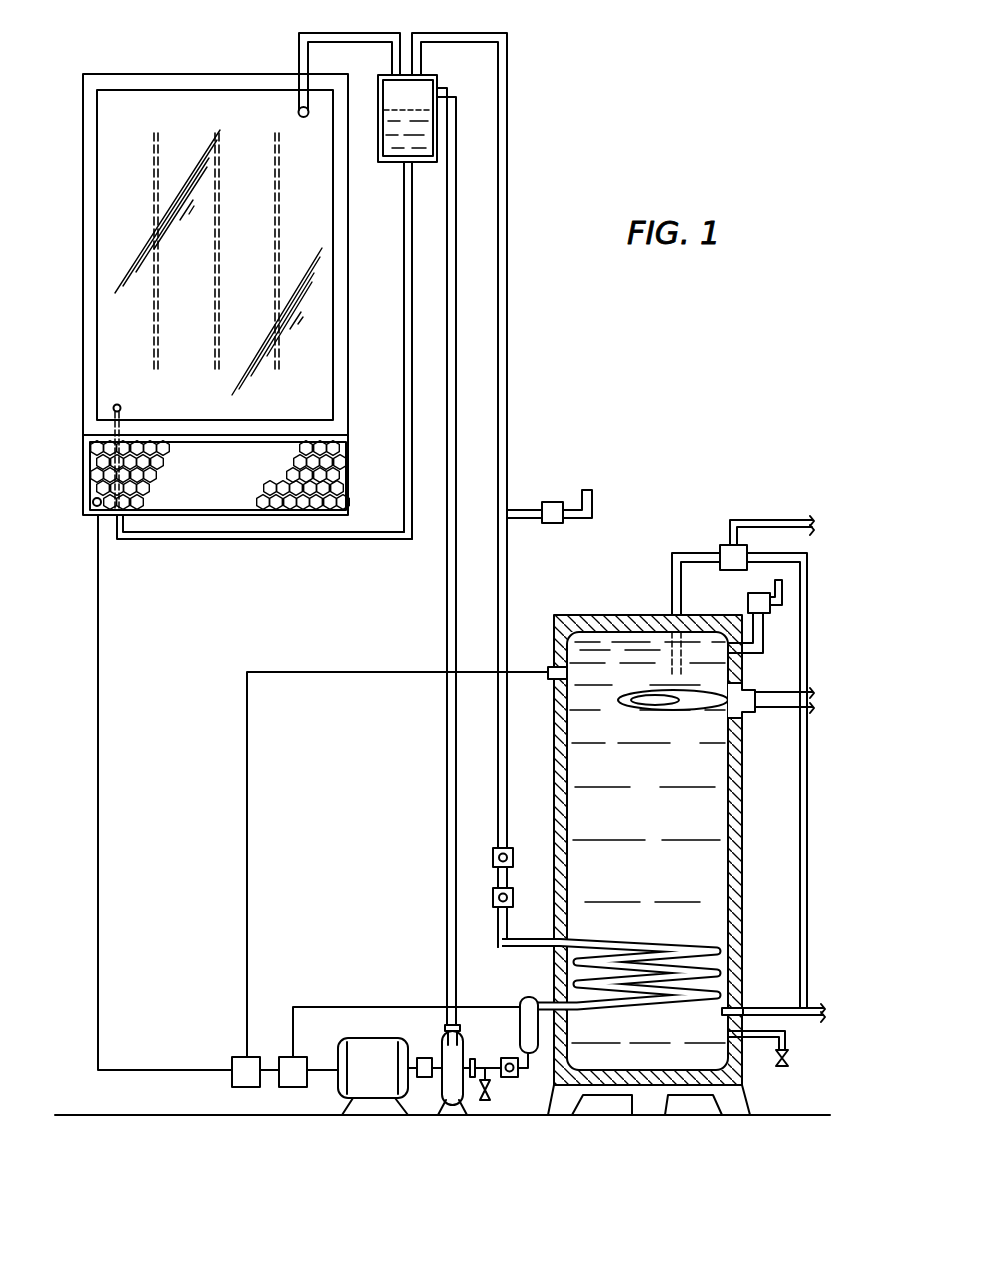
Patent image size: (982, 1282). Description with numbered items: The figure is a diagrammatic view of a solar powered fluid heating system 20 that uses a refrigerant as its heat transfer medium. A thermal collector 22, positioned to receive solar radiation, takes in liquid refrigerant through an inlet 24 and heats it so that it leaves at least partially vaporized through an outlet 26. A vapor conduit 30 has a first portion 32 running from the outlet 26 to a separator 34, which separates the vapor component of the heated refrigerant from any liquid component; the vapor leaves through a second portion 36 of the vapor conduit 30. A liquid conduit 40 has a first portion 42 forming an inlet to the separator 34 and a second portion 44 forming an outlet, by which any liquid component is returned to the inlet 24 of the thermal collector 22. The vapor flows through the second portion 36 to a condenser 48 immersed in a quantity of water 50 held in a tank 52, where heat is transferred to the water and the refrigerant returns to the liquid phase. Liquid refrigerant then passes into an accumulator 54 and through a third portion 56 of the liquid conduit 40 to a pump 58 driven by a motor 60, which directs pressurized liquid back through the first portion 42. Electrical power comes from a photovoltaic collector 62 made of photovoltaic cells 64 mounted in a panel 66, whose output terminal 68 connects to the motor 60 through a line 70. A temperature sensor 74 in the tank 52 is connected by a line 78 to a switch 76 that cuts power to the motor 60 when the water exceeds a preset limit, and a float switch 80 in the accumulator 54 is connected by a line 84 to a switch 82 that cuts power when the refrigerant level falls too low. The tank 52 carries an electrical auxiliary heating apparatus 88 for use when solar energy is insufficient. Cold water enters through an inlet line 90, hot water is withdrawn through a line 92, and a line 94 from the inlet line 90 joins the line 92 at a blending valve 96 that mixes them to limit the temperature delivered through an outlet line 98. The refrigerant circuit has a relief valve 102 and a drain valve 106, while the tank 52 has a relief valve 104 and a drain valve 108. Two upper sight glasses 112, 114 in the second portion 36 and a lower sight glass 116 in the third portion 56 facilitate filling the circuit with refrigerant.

The solar powered fluid heating system 20 is at (553, 186).
The thermal collector 22 is at (157, 72).
The inlet 24 is at (122, 408).
The outlet 26 is at (298, 112).
The vapor conduit 30 is at (531, 81).
The first portion of the vapor conduit 32 is at (320, 37).
The separator 34 is at (431, 76).
The second portion of the vapor conduit 36 is at (508, 289).
The liquid conduit 40 is at (457, 266).
The first portion of the liquid conduit 42 is at (447, 278).
The second portion of the liquid conduit 44 is at (404, 278).
The condenser 48 is at (673, 939).
The quantity of water 50 is at (637, 880).
The tank 52 is at (555, 743).
The accumulator 54 is at (520, 1035).
The third portion of the liquid conduit 56 is at (526, 1062).
The pump 58 is at (444, 1098).
The motor 60 is at (355, 1034).
The photovoltaic collector 62 is at (254, 523).
The photovoltaic cells 64 is at (266, 497).
The panel 66 is at (208, 500).
The output terminal 68 is at (96, 506).
The line 70 is at (100, 598).
The temperature sensor 74 is at (548, 667).
The switch 76 is at (238, 1057).
The line 78 is at (249, 932).
The float switch 80 is at (518, 1005).
The switch 82 is at (285, 1057).
The line 84 is at (388, 1007).
The auxiliary heating apparatus 88 is at (671, 717).
The inlet line 90 is at (790, 1016).
The line 92 is at (672, 612).
The line 94 is at (800, 800).
The blending valve 96 is at (718, 546).
The outlet line 98 is at (778, 520).
The relief valve 102 is at (553, 524).
The relief valve 104 is at (748, 601).
The drain valve 106 is at (486, 1100).
The drain valve 108 is at (783, 1067).
The upper sight glass 112 is at (494, 856).
The upper sight glass 114 is at (494, 895).
The lower sight glass 116 is at (510, 1078).